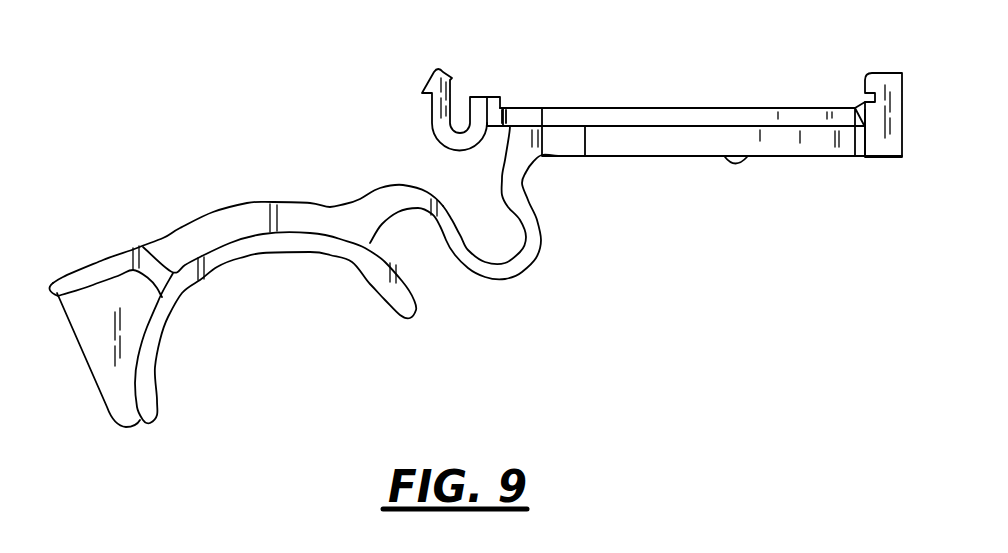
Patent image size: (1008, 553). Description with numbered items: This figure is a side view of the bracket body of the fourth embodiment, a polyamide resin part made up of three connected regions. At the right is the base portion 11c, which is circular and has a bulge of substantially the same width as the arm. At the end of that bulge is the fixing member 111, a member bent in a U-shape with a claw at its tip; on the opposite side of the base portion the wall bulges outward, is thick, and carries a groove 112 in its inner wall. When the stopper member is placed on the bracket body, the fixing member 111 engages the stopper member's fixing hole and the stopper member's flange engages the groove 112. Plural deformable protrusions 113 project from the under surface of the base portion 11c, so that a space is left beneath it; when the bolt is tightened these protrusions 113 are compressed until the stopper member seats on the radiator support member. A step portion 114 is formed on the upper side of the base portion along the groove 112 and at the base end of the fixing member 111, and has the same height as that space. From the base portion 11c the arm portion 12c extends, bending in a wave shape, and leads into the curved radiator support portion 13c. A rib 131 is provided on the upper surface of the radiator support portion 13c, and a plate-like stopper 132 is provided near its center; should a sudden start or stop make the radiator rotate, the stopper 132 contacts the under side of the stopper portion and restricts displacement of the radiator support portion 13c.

The base portion 11c is at (655, 150).
The fixing member 111 is at (426, 73).
The groove 112 is at (872, 93).
The protrusions 113 is at (740, 163).
The step portion 114 is at (505, 107).
The arm portion 12c is at (517, 256).
The radiator support portion 13c is at (254, 250).
The rib 131 is at (92, 337).
The stopper 132 is at (103, 258).